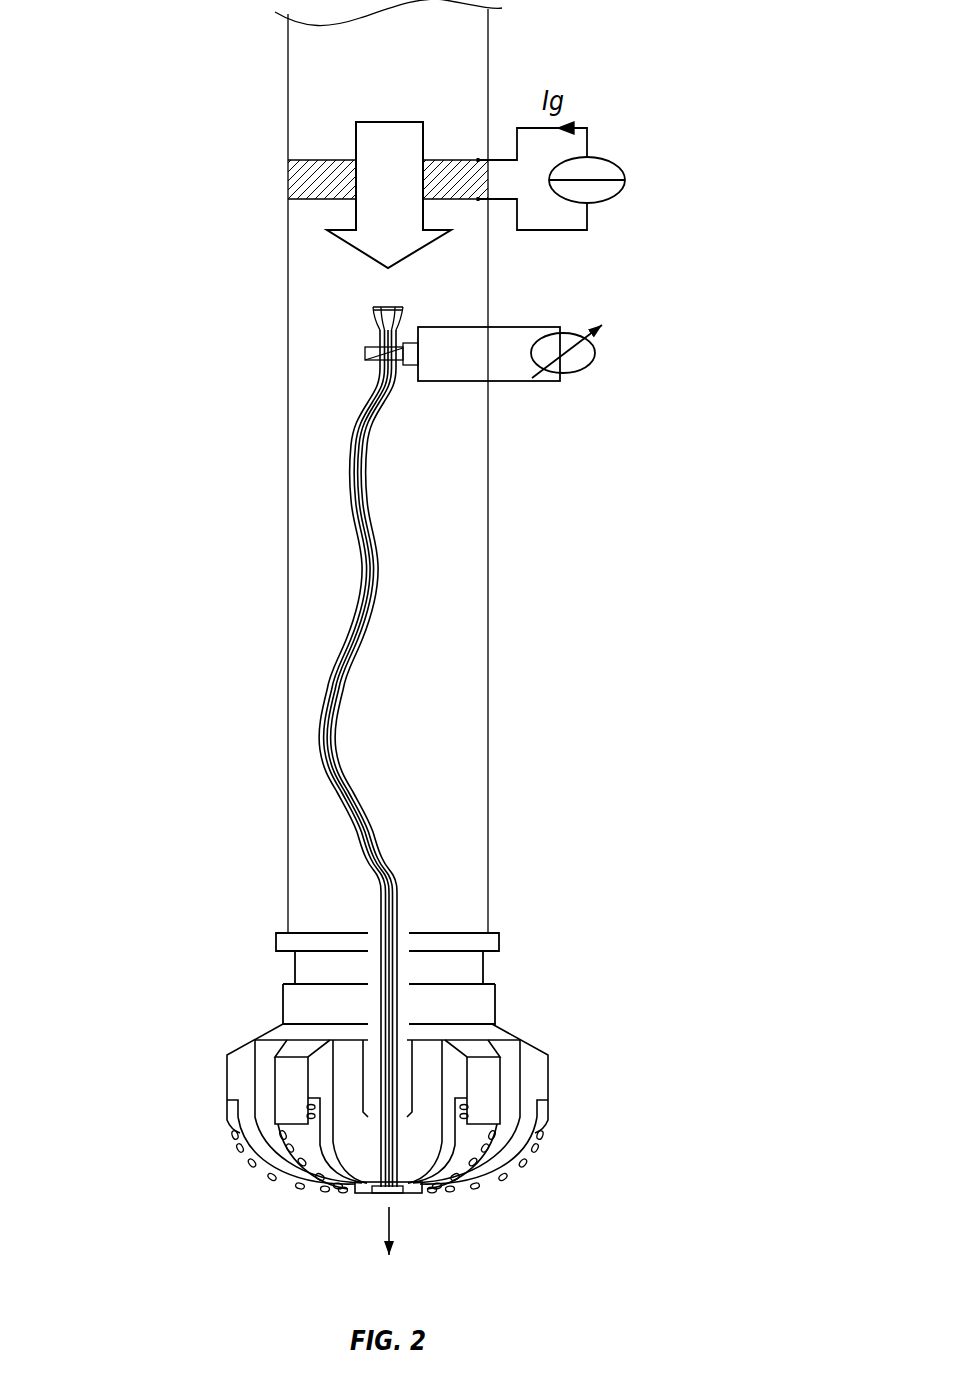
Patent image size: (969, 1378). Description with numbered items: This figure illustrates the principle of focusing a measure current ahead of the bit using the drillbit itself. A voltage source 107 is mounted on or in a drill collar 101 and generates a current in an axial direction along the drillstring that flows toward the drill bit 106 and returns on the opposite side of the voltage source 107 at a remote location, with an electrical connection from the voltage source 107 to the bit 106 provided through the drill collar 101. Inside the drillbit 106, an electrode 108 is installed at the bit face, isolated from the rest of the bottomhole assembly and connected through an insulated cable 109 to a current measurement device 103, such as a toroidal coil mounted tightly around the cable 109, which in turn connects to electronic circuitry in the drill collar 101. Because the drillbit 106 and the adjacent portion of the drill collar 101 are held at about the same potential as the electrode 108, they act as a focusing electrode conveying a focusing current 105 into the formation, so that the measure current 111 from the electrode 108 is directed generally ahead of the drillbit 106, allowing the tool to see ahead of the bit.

The drill collar 101 is at (288, 76).
The current measurement device 103 is at (577, 375).
The focusing current 105 is at (278, 615).
The drill bit 106 is at (525, 1095).
The voltage source 107 is at (288, 179).
The electrode 108 is at (397, 1197).
The cable 109 is at (368, 493).
The measure current 111 is at (385, 1232).